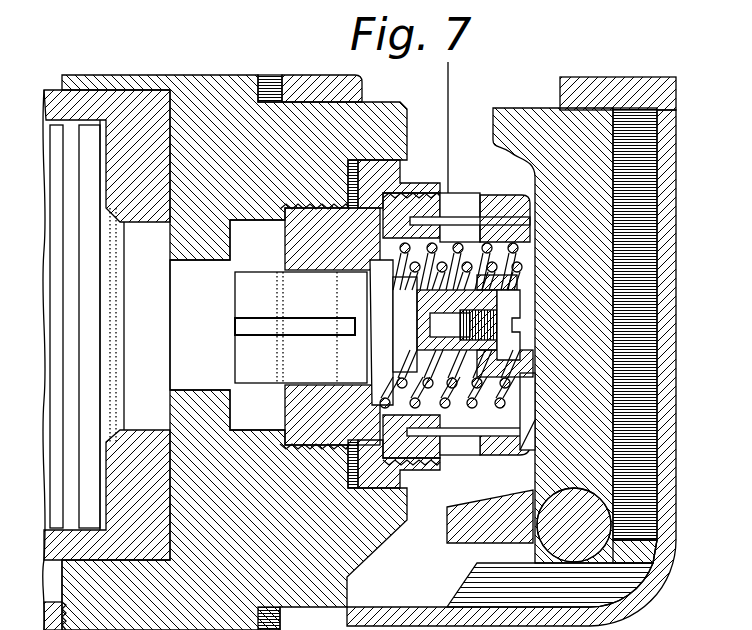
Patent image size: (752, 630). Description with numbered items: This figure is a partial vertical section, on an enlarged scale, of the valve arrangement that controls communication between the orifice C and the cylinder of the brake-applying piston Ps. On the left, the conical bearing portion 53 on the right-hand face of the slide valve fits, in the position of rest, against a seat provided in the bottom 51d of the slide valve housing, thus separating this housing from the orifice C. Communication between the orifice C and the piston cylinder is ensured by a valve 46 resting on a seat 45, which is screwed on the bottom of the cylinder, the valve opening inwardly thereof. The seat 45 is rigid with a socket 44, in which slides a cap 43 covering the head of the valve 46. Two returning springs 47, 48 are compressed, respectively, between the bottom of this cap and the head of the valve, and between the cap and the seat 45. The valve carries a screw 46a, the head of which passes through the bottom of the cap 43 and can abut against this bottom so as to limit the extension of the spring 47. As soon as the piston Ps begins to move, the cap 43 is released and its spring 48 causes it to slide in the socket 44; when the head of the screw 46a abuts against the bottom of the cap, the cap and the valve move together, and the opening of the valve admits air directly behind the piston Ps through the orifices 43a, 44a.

The seat 45 is at (385, 184).
The orifice 43a is at (461, 232).
The socket 44 is at (512, 207).
The orifice 44a is at (463, 444).
The cap 43 is at (523, 444).
The valve 46 is at (378, 300).
The screw 46a is at (505, 318).
The returning spring 47 is at (418, 372).
The returning spring 48 is at (410, 412).
The conical bearing portion 53 is at (116, 310).
The bottom of the housing of the slide valve 51d is at (139, 442).
The orifice C is at (227, 325).
The brake-applying piston Ps is at (640, 125).